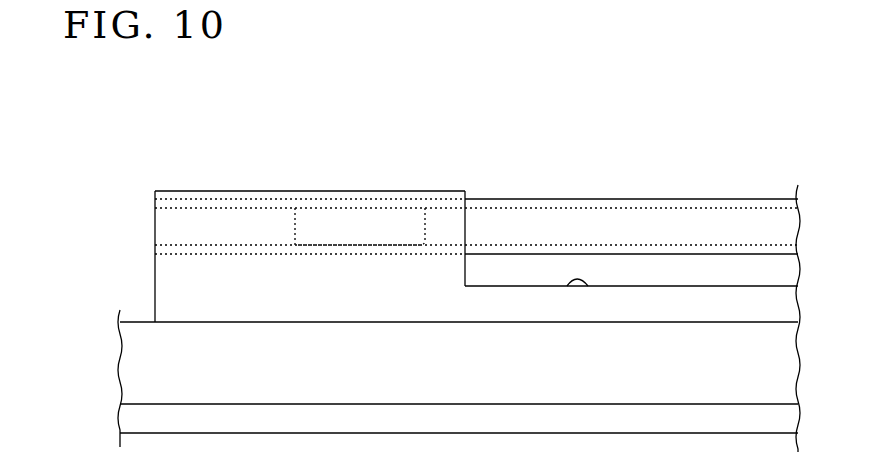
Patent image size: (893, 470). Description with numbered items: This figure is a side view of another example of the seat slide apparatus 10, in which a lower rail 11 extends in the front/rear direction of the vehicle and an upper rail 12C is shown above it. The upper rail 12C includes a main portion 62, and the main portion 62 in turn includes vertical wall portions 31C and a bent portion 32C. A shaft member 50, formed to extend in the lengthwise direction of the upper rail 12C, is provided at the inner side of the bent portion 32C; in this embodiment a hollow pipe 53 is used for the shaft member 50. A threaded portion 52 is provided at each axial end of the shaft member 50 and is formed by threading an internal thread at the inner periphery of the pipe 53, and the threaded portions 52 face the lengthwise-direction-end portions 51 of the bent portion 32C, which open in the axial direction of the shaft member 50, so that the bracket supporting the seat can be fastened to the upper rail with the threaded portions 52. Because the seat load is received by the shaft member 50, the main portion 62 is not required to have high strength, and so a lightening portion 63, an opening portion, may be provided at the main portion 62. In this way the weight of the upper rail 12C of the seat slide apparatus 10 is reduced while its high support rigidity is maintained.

The light emitting device 10 is at (96, 160).
The lower rail 11 is at (125, 321).
The vertical wall portion 31C is at (209, 322).
The upper rail 12C is at (310, 230).
The main portion 62 is at (245, 190).
The lengthwise-direction-end portion 51 is at (155, 203).
The threaded portion 52 is at (345, 248).
The bent portion 32C is at (459, 187).
The shaft member 50 is at (631, 199).
The pipe 53 is at (643, 195).
The lightening portion 63 is at (588, 286).